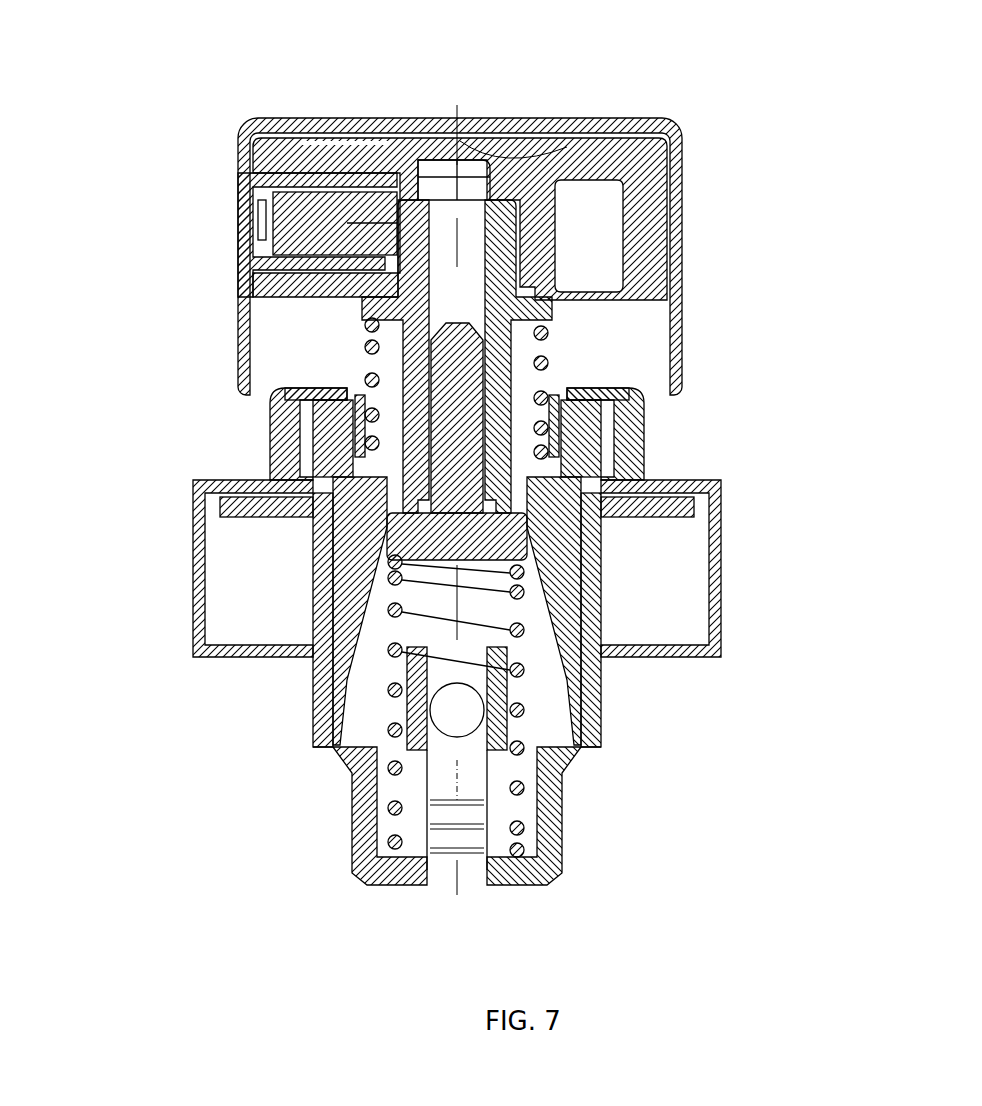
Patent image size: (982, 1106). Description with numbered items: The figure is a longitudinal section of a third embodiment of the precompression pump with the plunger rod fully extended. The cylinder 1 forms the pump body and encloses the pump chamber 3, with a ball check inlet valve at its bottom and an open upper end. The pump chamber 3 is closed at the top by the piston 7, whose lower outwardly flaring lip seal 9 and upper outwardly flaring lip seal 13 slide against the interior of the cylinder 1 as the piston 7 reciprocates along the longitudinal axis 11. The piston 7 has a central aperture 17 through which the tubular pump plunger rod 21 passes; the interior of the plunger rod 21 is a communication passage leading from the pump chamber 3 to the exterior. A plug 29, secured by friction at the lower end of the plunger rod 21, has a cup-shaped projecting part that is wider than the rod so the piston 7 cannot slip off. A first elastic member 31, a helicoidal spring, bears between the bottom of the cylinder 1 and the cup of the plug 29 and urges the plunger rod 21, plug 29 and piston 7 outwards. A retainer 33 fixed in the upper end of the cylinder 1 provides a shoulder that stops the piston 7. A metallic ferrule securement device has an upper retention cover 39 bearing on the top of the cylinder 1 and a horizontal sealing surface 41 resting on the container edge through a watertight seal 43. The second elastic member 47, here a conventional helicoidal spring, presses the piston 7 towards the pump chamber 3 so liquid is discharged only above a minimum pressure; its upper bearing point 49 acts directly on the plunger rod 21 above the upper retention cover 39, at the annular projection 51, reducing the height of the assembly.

The cylinder 1 is at (357, 798).
The pump chamber 3 is at (597, 750).
The piston 7 is at (580, 588).
The lower outwardly flaring lip seal 9 is at (593, 712).
The longitudinal axis 11 is at (462, 107).
The upper outwardly flaring lip seal 13 is at (585, 565).
The central aperture 17 is at (372, 367).
The pump plunger rod 21 is at (502, 262).
The plug 29 is at (647, 460).
The first elastic member 31 is at (400, 728).
The retainer 33 is at (280, 437).
The upper retention cover 39 is at (620, 377).
The horizontal sealing surface 41 is at (607, 490).
The watertight seal 43 is at (258, 516).
The second elastic member 47 is at (367, 344).
The upper bearing point 49 is at (240, 298).
The annular projection 51 is at (535, 310).